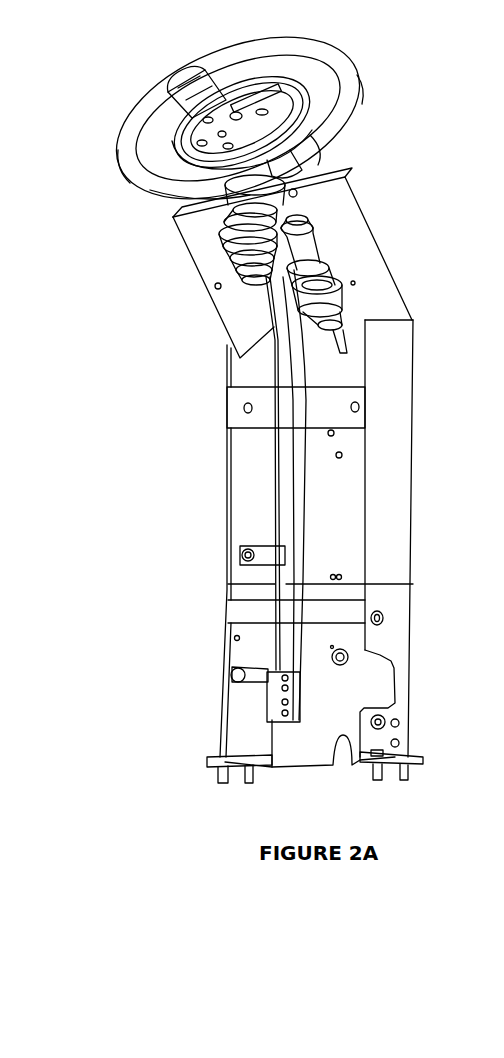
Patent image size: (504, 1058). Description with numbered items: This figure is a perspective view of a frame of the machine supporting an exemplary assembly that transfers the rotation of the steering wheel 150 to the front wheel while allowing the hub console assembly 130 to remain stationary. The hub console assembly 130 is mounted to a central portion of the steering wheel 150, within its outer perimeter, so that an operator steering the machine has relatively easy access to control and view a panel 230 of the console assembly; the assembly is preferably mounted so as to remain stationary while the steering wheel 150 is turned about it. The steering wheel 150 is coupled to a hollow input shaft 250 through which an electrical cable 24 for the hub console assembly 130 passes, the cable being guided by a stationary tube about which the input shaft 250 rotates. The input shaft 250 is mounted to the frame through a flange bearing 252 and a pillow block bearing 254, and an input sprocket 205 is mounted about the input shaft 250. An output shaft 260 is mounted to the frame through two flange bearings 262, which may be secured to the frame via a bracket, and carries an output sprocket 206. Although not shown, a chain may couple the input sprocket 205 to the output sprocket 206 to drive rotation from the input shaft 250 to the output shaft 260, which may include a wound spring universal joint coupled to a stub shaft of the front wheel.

The electrical cable 24 is at (343, 330).
The hub console assembly 130 is at (265, 78).
The steering wheel 150 is at (322, 52).
The input sprocket 205 is at (322, 237).
The output sprocket 206 is at (228, 258).
The panel 230 is at (200, 112).
The input shaft 250 is at (293, 218).
The flange bearing 252 is at (290, 232).
The pillow block bearing 254 is at (348, 290).
The output shaft 260 is at (293, 338).
The flange bearings 262 is at (227, 237).